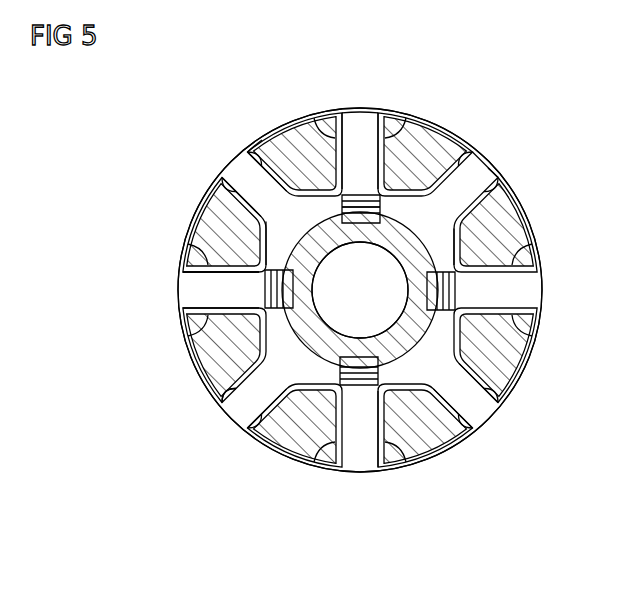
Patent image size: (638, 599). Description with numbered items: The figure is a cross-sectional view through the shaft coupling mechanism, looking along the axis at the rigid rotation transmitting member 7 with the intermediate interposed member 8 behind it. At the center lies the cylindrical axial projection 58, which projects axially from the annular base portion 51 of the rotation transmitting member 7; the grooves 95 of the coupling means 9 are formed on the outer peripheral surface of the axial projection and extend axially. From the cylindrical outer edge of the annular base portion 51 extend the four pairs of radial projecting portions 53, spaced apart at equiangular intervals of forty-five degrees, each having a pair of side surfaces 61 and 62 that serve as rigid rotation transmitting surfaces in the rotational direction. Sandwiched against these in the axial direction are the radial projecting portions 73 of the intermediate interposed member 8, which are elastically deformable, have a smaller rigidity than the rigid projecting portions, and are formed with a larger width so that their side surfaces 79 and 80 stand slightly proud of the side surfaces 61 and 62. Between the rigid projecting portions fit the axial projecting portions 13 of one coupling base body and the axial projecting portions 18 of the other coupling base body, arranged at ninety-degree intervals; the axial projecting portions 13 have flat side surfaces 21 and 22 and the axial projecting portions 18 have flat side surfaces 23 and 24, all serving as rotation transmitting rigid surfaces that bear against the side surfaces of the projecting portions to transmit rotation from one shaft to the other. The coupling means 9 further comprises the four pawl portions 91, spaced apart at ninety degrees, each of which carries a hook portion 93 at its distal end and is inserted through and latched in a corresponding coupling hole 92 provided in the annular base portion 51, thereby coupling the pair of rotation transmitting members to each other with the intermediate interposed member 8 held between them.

The rotation transmitting member 7 is at (232, 418).
The intermediate interposed member 8 is at (257, 433).
The coupling means 9 is at (210, 292).
The axial projecting portion 13 is at (262, 140).
The axial projecting portion 18 is at (448, 150).
The flat side surface 21 is at (337, 118).
The flat side surface 22 is at (250, 153).
The flat side surface 23 is at (485, 173).
The flat side surface 24 is at (384, 112).
The annular base portion 51 is at (358, 397).
The radial projecting portion 53 is at (358, 108).
The cylindrical axial projection 58 is at (345, 343).
The side surface 61 is at (313, 118).
The side surface 62 is at (408, 120).
The radial projecting portion 73 is at (215, 200).
The side surface 79 is at (285, 125).
The side surface 80 is at (432, 132).
The pawl portion 91 is at (362, 196).
The coupling hole 92 is at (353, 225).
The hook portion 93 is at (371, 225).
The groove 95 is at (330, 224).